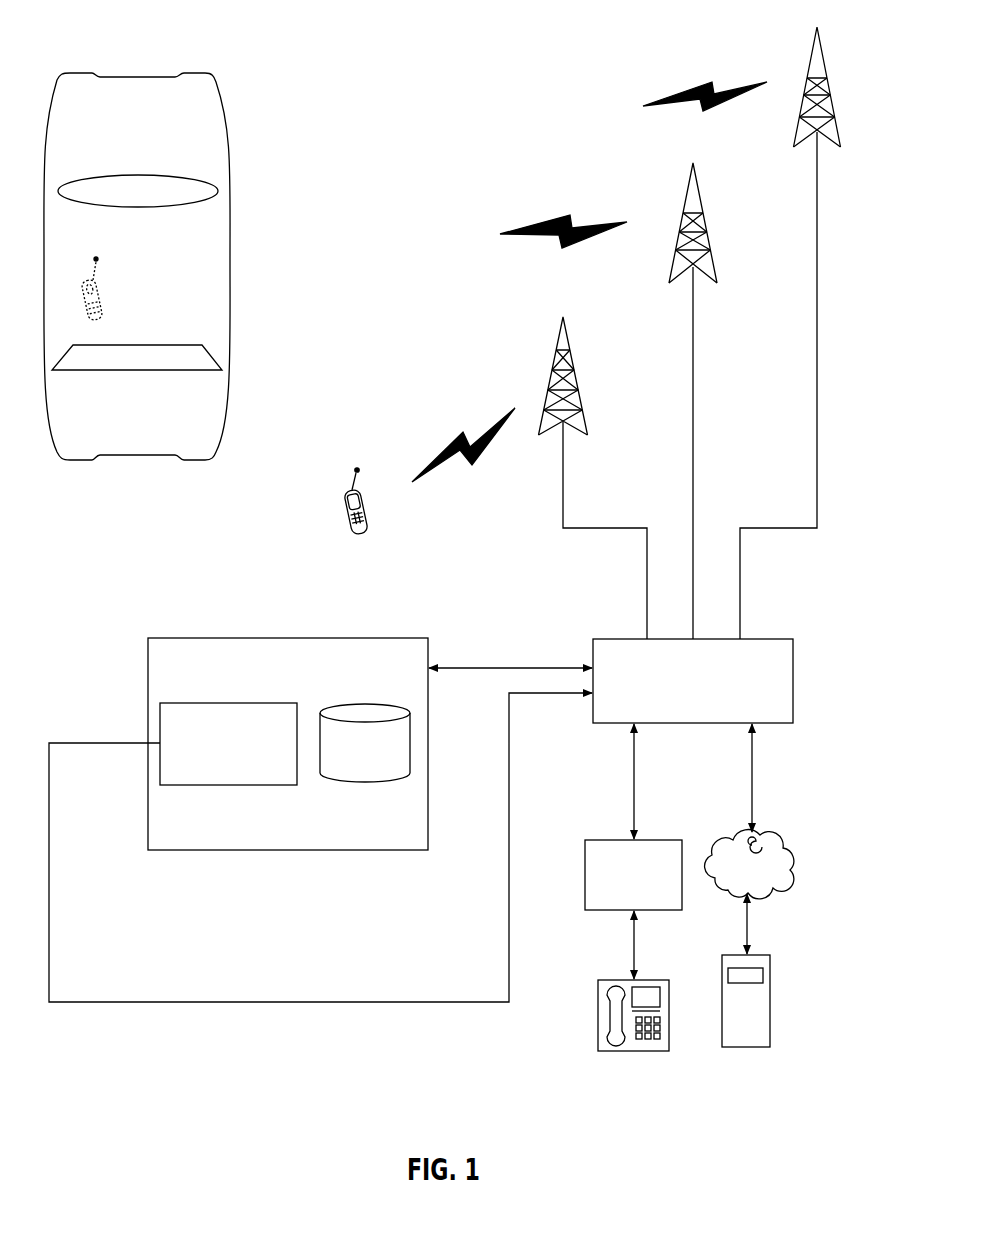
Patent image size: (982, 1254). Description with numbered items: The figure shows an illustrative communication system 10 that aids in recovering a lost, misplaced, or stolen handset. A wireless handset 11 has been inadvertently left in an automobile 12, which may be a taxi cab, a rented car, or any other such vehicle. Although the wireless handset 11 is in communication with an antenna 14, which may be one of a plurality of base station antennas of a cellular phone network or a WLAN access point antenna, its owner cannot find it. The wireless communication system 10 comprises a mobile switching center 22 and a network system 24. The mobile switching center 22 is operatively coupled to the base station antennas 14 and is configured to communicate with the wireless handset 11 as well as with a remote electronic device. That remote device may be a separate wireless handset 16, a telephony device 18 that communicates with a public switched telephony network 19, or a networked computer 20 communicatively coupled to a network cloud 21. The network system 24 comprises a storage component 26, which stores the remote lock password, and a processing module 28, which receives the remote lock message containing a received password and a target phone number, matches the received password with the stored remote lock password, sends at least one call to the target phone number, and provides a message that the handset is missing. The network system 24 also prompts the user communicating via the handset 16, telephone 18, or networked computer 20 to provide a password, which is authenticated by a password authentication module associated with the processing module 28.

The communication system 10 is at (458, 101).
The wireless handset 11 is at (100, 290).
The automobile 12 is at (230, 147).
The antenna 14 is at (575, 372).
The separate wireless handset 16 is at (363, 495).
The telephony device 18 is at (598, 993).
The public switched telephony network (PSTN) 19 is at (598, 840).
The networked computer 20 is at (768, 985).
The network cloud 21 is at (787, 842).
The mobile switching center 22 is at (777, 639).
The network system 24 is at (322, 638).
The storage component 26 is at (410, 737).
The processing module 28 is at (297, 722).